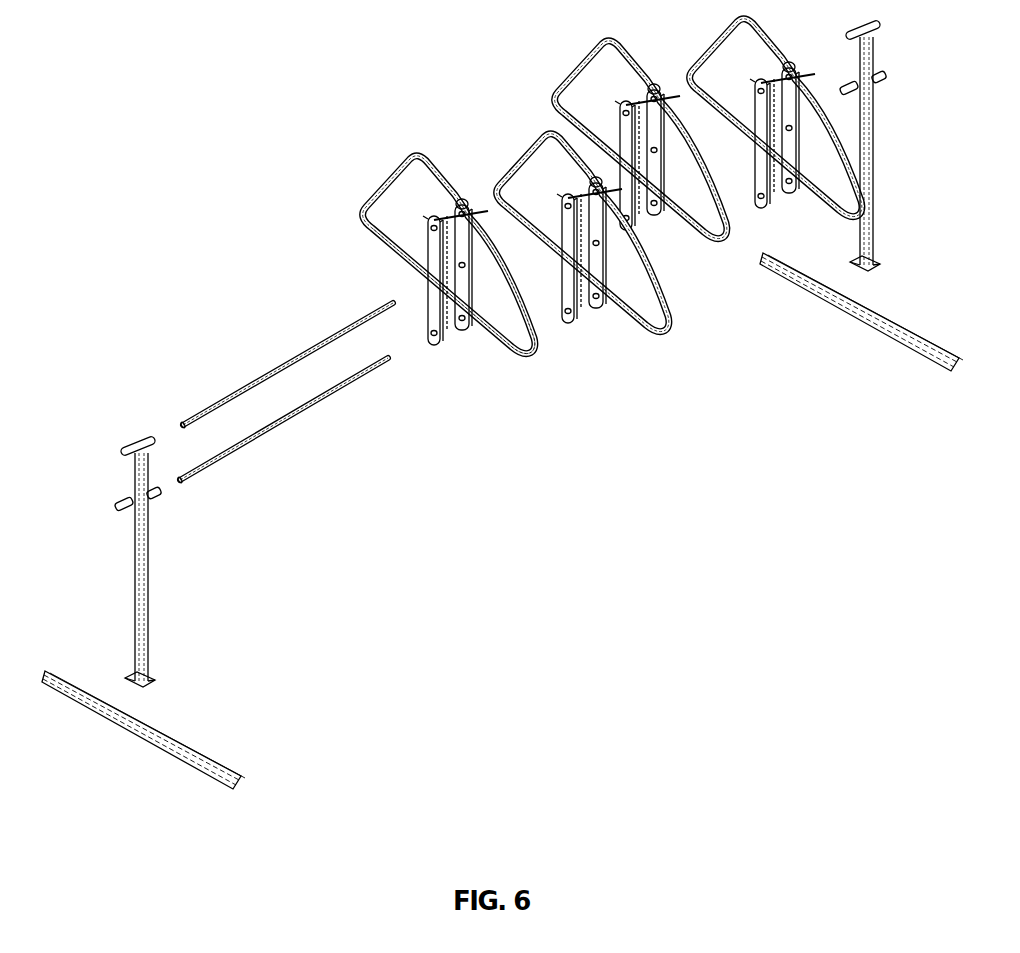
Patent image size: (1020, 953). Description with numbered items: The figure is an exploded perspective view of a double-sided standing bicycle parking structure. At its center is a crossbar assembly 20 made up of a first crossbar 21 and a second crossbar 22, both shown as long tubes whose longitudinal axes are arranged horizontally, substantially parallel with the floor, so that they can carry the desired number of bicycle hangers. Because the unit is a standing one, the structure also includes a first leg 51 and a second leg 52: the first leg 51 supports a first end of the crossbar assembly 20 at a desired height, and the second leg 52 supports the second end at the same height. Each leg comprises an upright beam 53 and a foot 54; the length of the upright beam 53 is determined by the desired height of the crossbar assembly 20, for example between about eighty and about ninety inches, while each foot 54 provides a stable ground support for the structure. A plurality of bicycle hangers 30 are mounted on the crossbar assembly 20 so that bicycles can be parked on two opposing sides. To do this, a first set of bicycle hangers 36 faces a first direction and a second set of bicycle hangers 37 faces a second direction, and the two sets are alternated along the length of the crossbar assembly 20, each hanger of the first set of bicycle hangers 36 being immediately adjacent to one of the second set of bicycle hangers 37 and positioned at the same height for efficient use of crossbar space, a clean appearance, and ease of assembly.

The crossbar assembly 20 is at (313, 462).
The first crossbar 21 is at (290, 362).
The second crossbar 22 is at (380, 500).
The bicycle hangers 30 is at (609, 266).
The first set of bicycle hangers 36 is at (520, 360).
The second set of bicycle hangers 37 is at (390, 185).
The first leg 51 is at (145, 595).
The second leg 52 is at (870, 63).
The upright beam 53 is at (140, 483).
The foot 54 is at (193, 752).